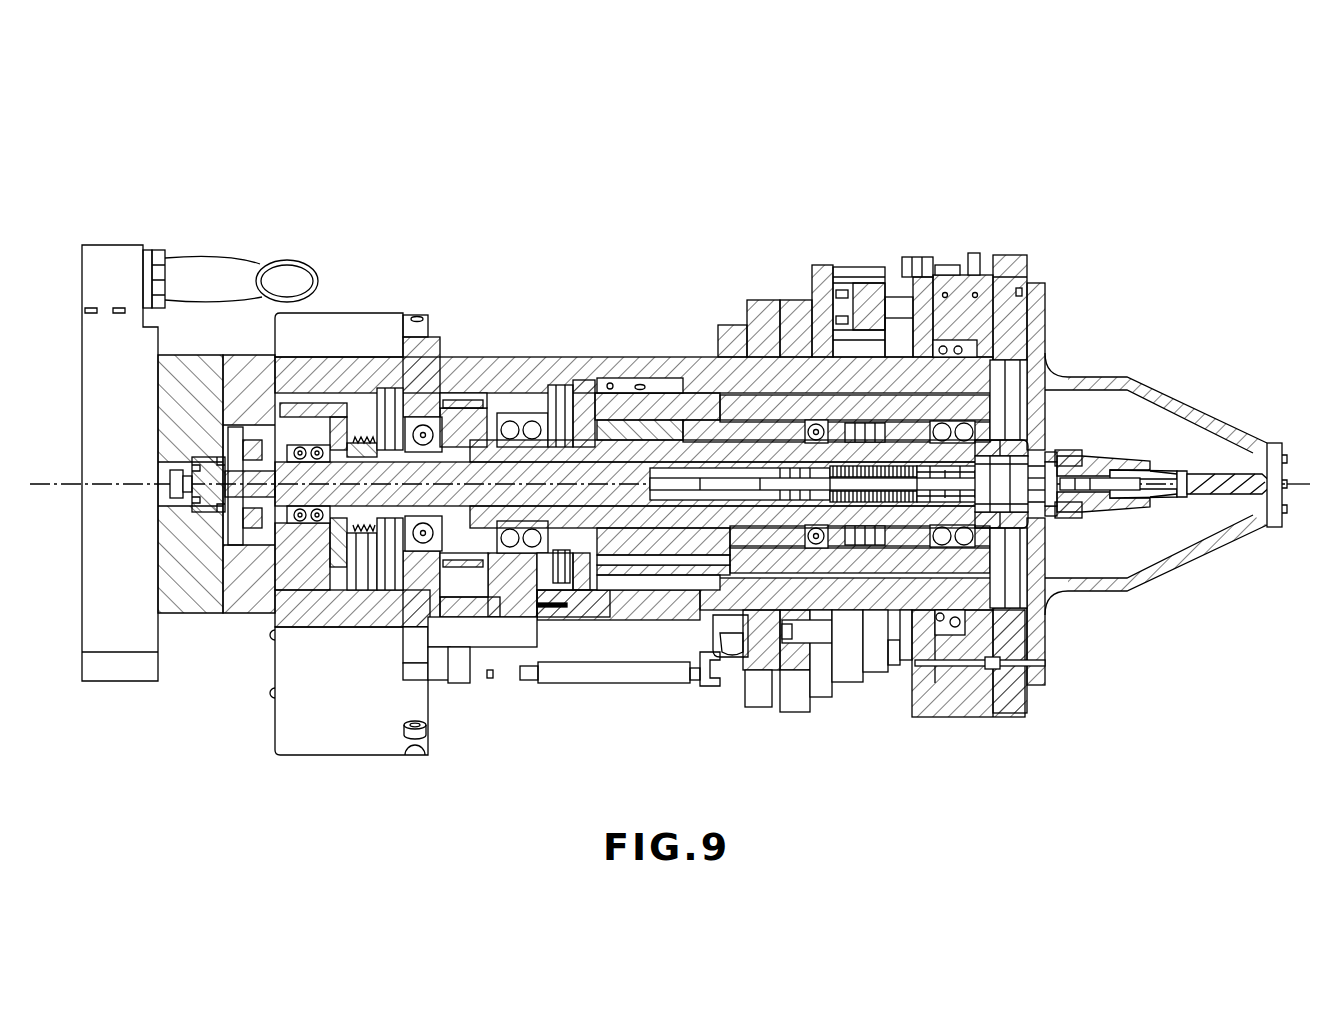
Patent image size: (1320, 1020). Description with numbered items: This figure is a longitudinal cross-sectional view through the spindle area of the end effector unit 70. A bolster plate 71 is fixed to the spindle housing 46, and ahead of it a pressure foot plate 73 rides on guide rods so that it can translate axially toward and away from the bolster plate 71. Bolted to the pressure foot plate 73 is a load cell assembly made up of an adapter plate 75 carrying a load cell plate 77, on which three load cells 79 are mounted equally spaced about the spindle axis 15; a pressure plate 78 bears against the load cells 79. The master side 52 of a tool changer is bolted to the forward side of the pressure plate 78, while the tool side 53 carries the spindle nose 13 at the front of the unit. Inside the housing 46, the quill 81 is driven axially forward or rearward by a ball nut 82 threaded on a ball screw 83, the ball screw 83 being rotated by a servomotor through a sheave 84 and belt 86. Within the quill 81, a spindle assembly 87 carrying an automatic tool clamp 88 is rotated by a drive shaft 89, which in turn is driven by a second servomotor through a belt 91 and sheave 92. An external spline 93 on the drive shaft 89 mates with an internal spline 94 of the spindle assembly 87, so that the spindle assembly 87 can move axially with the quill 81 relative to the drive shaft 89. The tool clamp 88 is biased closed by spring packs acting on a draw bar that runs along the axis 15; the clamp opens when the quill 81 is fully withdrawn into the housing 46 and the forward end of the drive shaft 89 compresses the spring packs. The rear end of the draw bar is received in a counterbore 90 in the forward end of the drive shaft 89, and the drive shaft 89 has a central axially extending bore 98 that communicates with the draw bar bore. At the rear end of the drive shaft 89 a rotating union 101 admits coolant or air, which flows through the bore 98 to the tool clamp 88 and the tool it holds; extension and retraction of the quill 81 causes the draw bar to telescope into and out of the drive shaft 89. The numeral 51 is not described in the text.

The spindle nose 13 is at (1103, 380).
The spindle axis 15 is at (1310, 466).
The spindle housing 46 is at (587, 357).
The spindle nose assembly 51 is at (1011, 427).
The master side 52 is at (977, 257).
The tool side 53 is at (1015, 255).
The end effector unit 70 is at (631, 474).
The bolster plate 71 is at (757, 300).
The pressure foot plate 73 is at (797, 300).
The adapter plate 75 is at (818, 265).
The load cell plate 77 is at (843, 267).
The pressure plate 78 is at (920, 277).
The load cells 79 is at (887, 297).
The quill 81 is at (675, 398).
The ball nut 82 is at (637, 384).
The ball screw 83 is at (722, 440).
The sheave 84 is at (498, 413).
The belt 86 is at (463, 400).
The spindle assembly 87 is at (1040, 451).
The automatic tool clamp 88 is at (1107, 453).
The drive shaft 89 is at (573, 520).
The counterbore 90 is at (770, 480).
The belt 91 is at (363, 437).
The sheave 92 is at (356, 450).
The external spline 93 is at (643, 555).
The internal spline 94 is at (693, 500).
The central bore 98 is at (498, 486).
The rotating union 101 is at (222, 510).